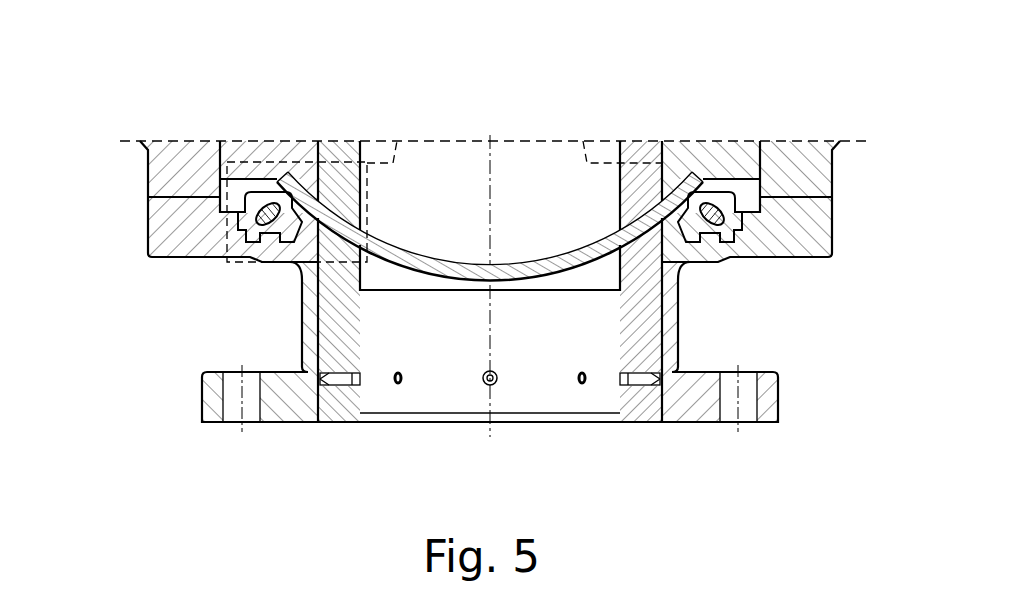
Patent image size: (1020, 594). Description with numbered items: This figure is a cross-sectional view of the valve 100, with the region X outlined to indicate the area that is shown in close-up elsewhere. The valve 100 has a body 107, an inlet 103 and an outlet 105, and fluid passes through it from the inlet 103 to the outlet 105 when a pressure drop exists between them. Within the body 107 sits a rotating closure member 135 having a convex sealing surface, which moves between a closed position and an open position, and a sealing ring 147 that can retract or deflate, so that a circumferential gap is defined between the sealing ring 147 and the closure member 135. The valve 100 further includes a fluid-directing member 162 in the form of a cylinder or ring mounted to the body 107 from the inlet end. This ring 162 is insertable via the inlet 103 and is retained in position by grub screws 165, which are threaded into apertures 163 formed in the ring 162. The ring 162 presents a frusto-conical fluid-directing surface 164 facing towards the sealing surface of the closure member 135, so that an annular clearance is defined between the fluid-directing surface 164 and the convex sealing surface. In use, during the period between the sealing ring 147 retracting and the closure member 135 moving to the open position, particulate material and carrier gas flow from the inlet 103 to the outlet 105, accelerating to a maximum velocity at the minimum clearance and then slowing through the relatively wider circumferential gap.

The valve 100 is at (453, 287).
The inlet 103 is at (539, 344).
The outlet 105 is at (517, 137).
The body 107 is at (183, 231).
The closure member 135 is at (288, 172).
The sealing ring 147 is at (720, 180).
The fluid-directing member 162 is at (650, 340).
The apertures 163 is at (368, 413).
The fluid-directing surface 164 is at (625, 250).
The grub screws 165 is at (497, 385).
The region X is at (248, 162).